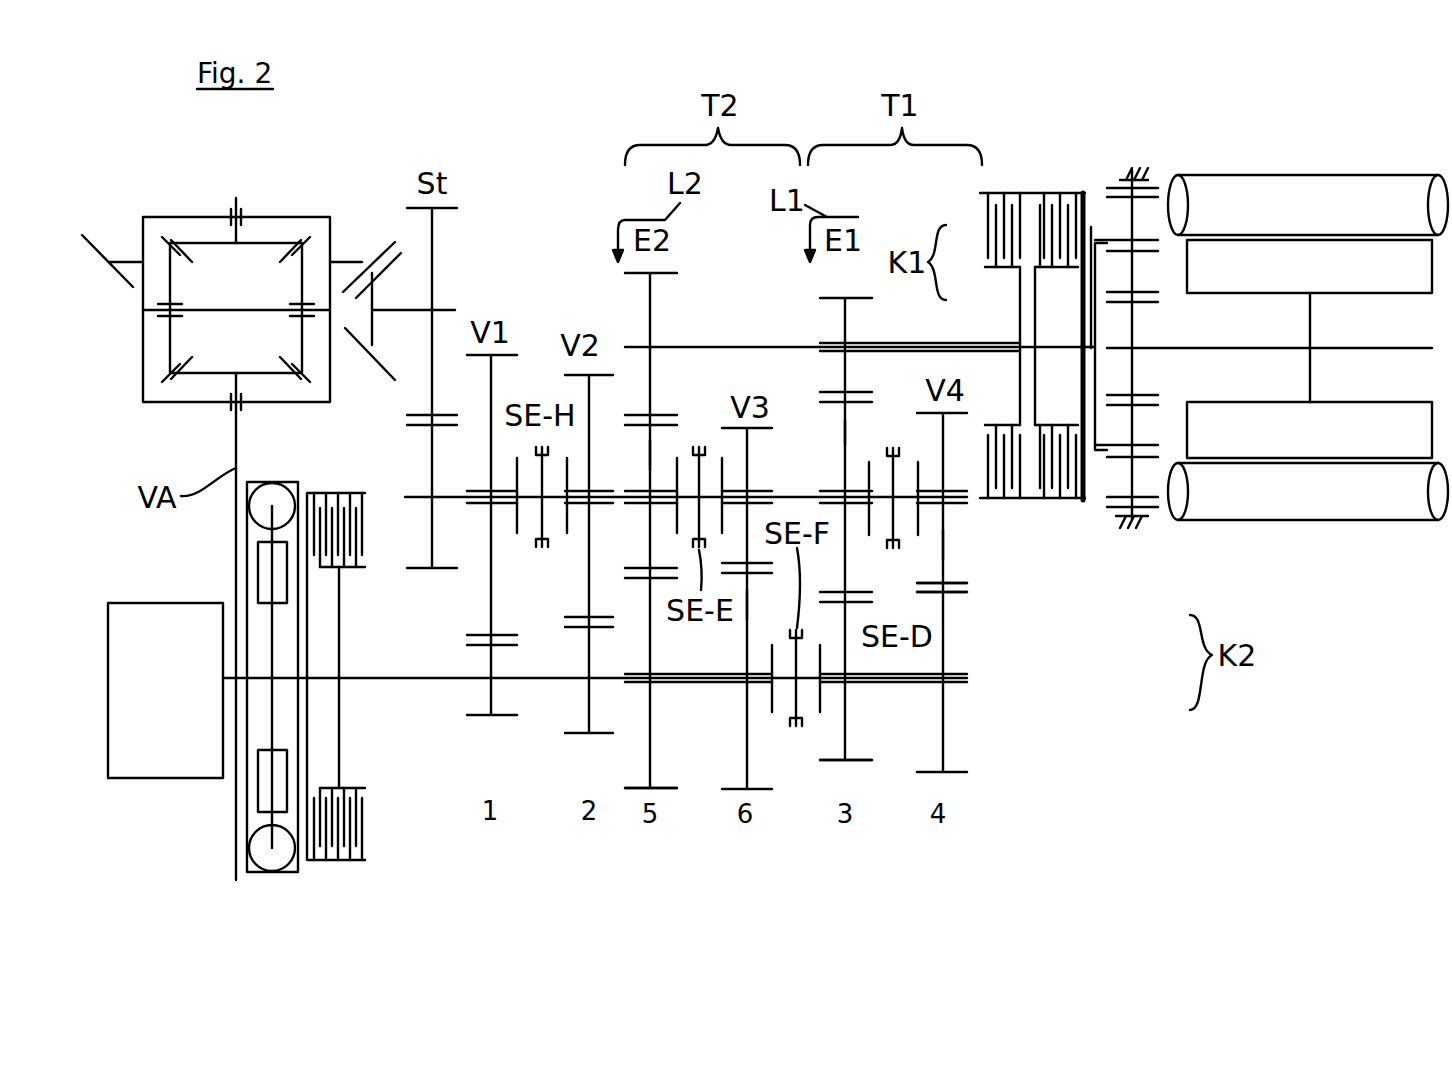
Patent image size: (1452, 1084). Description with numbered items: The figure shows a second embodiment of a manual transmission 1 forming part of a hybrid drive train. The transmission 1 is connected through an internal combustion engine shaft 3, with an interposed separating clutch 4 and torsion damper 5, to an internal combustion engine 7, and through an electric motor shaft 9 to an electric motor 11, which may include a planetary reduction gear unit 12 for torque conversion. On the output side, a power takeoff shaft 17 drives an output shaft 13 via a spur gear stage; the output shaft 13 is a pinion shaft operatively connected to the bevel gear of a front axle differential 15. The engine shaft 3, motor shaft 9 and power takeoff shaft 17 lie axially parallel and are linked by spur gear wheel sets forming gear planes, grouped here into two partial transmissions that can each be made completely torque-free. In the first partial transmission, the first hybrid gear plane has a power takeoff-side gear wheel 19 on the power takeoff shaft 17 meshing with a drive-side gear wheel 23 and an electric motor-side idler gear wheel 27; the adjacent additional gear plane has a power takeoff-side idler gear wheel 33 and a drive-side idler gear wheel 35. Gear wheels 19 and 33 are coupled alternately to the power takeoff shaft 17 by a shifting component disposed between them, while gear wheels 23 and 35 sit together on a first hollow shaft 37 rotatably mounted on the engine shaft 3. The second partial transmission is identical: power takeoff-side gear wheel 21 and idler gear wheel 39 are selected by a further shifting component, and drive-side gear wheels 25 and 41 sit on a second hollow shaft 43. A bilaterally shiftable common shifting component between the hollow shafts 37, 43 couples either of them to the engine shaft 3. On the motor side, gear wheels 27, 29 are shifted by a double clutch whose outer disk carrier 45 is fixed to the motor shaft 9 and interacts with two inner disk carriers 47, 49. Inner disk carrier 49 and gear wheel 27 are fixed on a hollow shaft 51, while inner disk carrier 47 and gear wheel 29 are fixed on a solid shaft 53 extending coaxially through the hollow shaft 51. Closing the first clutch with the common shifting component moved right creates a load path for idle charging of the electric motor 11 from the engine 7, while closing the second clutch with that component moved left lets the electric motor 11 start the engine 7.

The manual transmission 1 is at (1104, 140).
The internal combustion engine shaft 3 is at (413, 678).
The separating clutch 4 is at (340, 860).
The torsion damper 5 is at (270, 872).
The internal combustion engine 7 is at (187, 701).
The electric motor shaft 9 is at (1095, 321).
The electric motor 11 is at (1333, 175).
The planetary reduction gear unit 12 is at (1113, 190).
The output shaft 13 is at (440, 310).
The front axle differential 15 is at (193, 217).
The power takeoff shaft 17 is at (412, 497).
The power takeoff-side gear wheel 19 is at (843, 432).
The power takeoff-side gear wheel 21 is at (645, 453).
The drive-side gear wheel 23 is at (833, 762).
The drive-side gear wheel 25 is at (663, 790).
The electric motor-side idler gear wheel 27 is at (862, 298).
The electric motor-side idler gear wheel 29 is at (648, 320).
The power takeoff-side idler gear wheel 33 is at (943, 545).
The drive-side idler gear wheel 35 is at (945, 625).
The first hollow shaft 37 is at (955, 675).
The power takeoff-side idler gear wheel 39 is at (740, 430).
The drive-side idler gear wheel 41 is at (747, 605).
The second hollow shaft 43 is at (705, 688).
The outer disk carrier 45 is at (987, 232).
The inner disk carrier 47 is at (1035, 395).
The inner disk carrier 49 is at (1020, 307).
The hollow shaft 51 is at (832, 342).
The solid shaft 53 is at (707, 345).